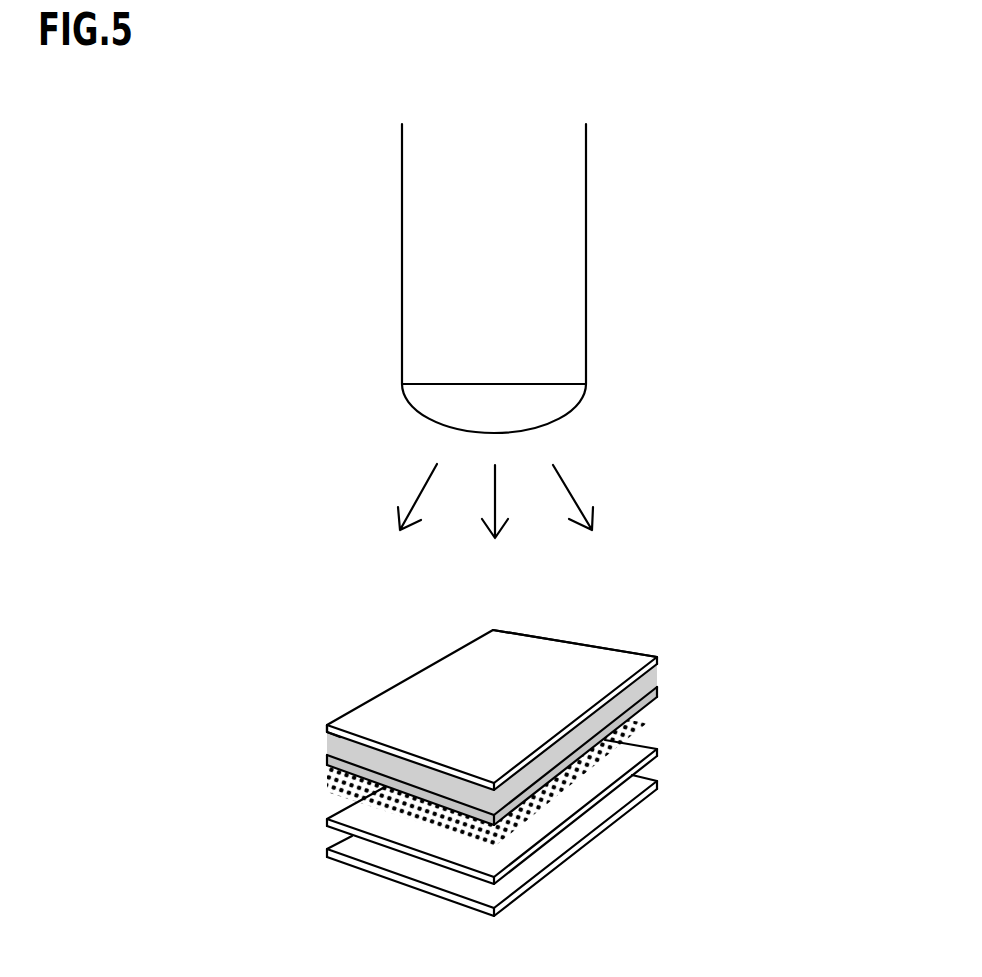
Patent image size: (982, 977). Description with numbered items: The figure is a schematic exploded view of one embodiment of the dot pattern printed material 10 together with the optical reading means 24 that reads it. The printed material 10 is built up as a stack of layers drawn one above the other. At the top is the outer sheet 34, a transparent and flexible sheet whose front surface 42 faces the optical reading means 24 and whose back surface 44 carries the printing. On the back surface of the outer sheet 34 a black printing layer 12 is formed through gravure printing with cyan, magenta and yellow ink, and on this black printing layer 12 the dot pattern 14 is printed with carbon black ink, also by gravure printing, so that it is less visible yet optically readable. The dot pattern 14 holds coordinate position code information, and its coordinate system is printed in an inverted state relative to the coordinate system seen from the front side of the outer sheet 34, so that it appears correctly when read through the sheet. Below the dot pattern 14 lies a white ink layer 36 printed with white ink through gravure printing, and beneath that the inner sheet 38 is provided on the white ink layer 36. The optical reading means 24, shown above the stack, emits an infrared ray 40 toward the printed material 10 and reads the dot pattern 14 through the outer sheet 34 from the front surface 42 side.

The dot pattern printed material 10 is at (262, 702).
The black printing layer 12 is at (635, 695).
The dot pattern 14 is at (645, 723).
The optical reading means 24 is at (570, 302).
The outer sheet 34 is at (613, 663).
The white ink layer 36 is at (650, 745).
The inner sheet 38 is at (583, 827).
The infrared ray 40 is at (565, 482).
The front surface 42 is at (373, 717).
The back surface 44 is at (332, 736).